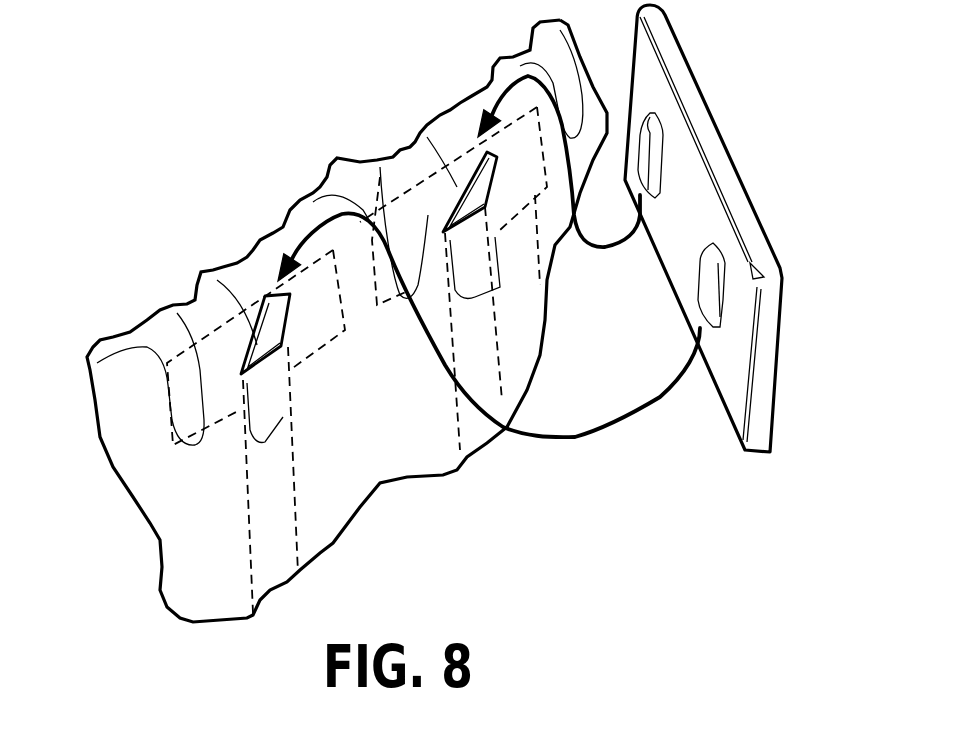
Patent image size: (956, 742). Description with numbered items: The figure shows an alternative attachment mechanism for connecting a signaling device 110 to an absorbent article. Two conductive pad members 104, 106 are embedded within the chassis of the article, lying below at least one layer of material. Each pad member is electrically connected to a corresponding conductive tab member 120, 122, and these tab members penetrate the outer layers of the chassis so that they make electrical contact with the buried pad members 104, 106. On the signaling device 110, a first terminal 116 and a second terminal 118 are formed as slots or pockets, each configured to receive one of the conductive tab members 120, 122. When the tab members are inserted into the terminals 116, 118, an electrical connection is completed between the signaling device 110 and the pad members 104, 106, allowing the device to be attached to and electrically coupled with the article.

The conductive pad member 104 is at (195, 297).
The conductive pad member 106 is at (575, 287).
The signaling device 110 is at (763, 373).
The first terminal 116 is at (706, 248).
The second terminal 118 is at (647, 135).
The conductive tab member 120 is at (254, 290).
The conductive tab member 122 is at (421, 145).